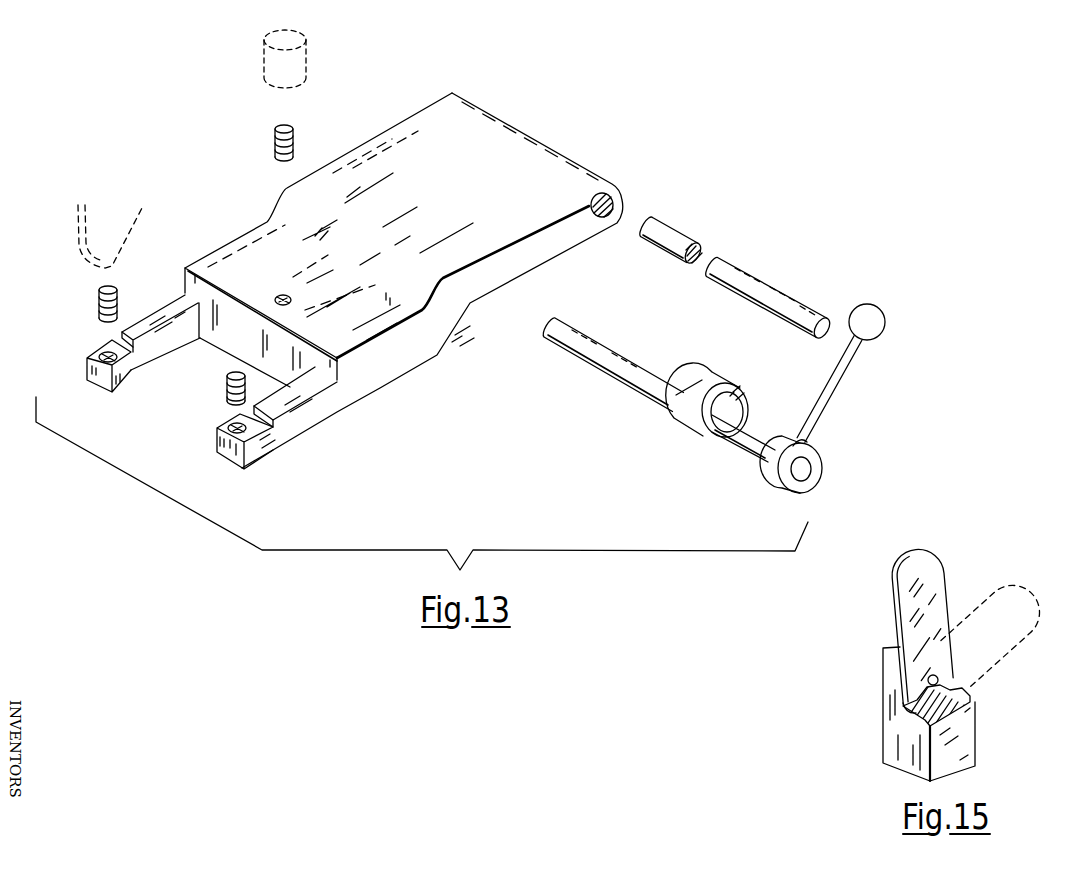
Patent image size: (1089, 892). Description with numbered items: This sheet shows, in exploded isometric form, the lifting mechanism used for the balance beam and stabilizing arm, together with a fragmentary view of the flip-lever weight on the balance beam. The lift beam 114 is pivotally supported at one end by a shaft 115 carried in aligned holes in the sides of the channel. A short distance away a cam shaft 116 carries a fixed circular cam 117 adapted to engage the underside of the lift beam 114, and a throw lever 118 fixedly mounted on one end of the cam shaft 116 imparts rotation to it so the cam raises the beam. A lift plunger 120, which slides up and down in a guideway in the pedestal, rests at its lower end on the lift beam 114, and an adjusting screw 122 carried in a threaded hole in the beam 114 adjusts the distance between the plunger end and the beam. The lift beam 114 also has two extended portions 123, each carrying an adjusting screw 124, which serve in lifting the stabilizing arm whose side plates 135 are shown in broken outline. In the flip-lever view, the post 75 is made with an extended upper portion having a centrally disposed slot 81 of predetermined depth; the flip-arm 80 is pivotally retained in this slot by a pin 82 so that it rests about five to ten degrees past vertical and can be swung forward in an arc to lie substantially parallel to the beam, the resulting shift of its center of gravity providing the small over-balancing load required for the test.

In FIG. 13, the lift beam 114 is at (415, 123).
In FIG. 13, the shaft 115 is at (735, 272).
In FIG. 13, the cam shaft 116 is at (590, 340).
In FIG. 13, the circular cam 117 is at (720, 378).
In FIG. 13, the throw lever 118 is at (838, 387).
In FIG. 13, the lift plunger 120 is at (304, 62).
In FIG. 13, the adjusting screw 122 is at (293, 128).
In FIG. 13, the extended portions 123 is at (137, 368).
In FIG. 13, the adjusting screw 124 is at (117, 288).
In FIG. 13, the side plates 135 is at (147, 208).
In FIG. 15, the post 75 is at (972, 733).
In FIG. 15, the flip-arm 80 is at (937, 579).
In FIG. 15, the slot 81 is at (903, 710).
In FIG. 15, the pin 82 is at (941, 683).